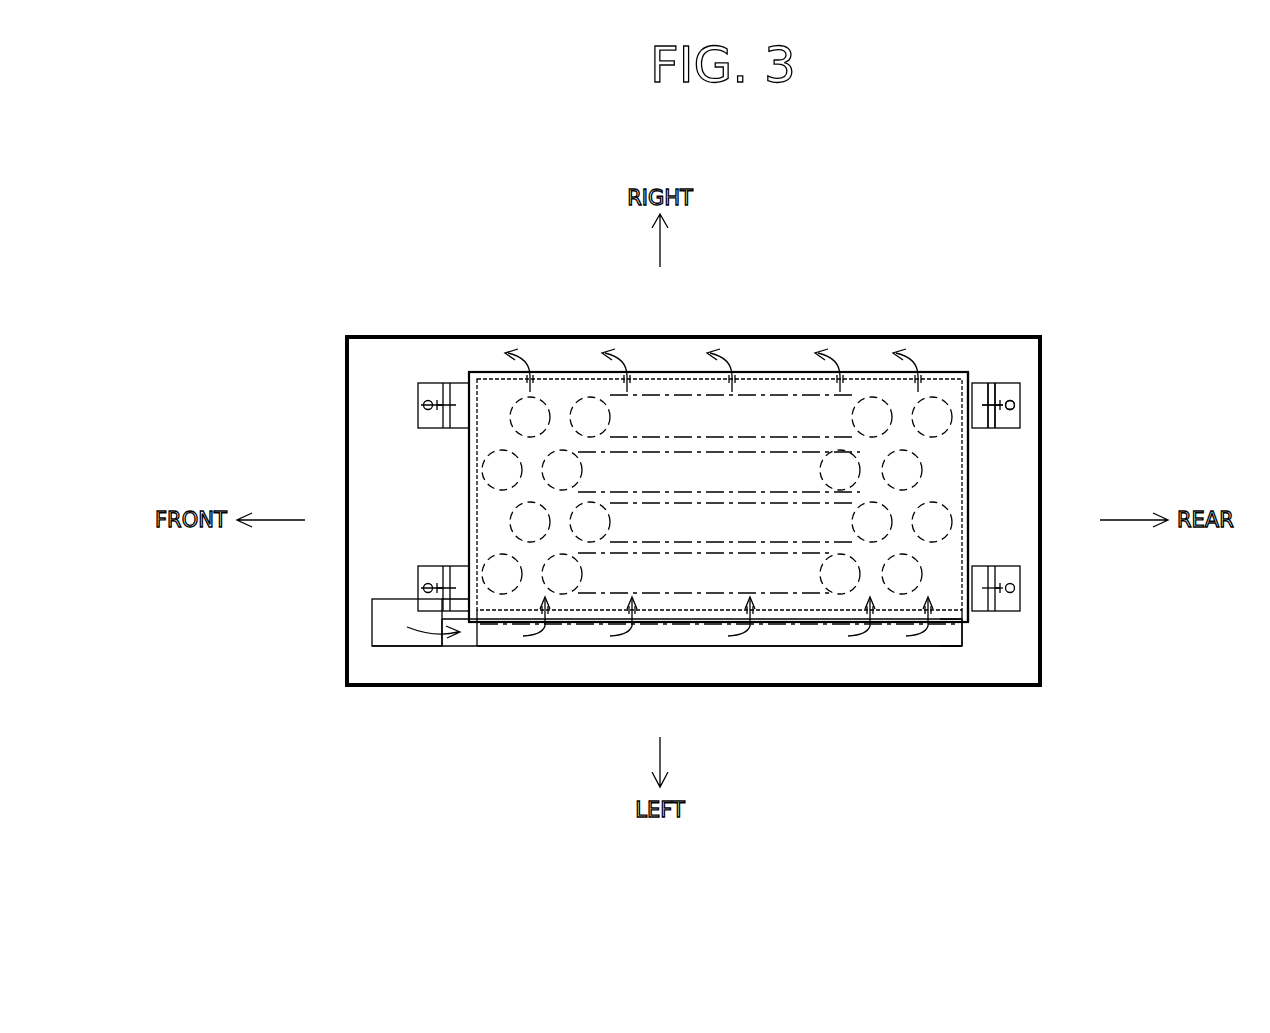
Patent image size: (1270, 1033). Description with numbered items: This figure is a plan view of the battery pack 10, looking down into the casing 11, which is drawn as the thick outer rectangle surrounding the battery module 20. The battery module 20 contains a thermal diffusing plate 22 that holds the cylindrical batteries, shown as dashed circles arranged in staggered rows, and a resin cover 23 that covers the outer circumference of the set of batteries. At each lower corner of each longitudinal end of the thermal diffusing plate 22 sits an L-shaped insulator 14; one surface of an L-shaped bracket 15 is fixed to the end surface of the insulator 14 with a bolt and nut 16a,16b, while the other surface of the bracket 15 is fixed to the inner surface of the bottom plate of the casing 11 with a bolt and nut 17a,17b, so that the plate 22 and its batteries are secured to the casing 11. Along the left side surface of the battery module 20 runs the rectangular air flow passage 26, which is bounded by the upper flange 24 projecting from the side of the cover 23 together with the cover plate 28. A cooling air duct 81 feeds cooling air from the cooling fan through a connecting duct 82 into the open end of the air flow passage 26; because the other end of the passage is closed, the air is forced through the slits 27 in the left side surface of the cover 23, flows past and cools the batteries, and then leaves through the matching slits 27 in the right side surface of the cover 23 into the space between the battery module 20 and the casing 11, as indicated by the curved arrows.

The battery pack 10 is at (969, 250).
The casing 11 is at (1046, 413).
The L-shaped insulator 14 is at (977, 382).
The L-shaped bracket 15 is at (993, 383).
The bolt and nut 16a,16b is at (1003, 398).
The bolt and nut 17a,17b is at (1015, 405).
The battery module 20 is at (936, 371).
The thermal diffusing plate 22 is at (970, 467).
The cover 23 is at (867, 379).
The upper flange 24 is at (945, 621).
The air flow passage 26 is at (811, 635).
The slits 27 is at (633, 373).
The cover plate 28 is at (882, 648).
The cooling air duct 81 is at (400, 646).
The connecting duct 82 is at (468, 644).